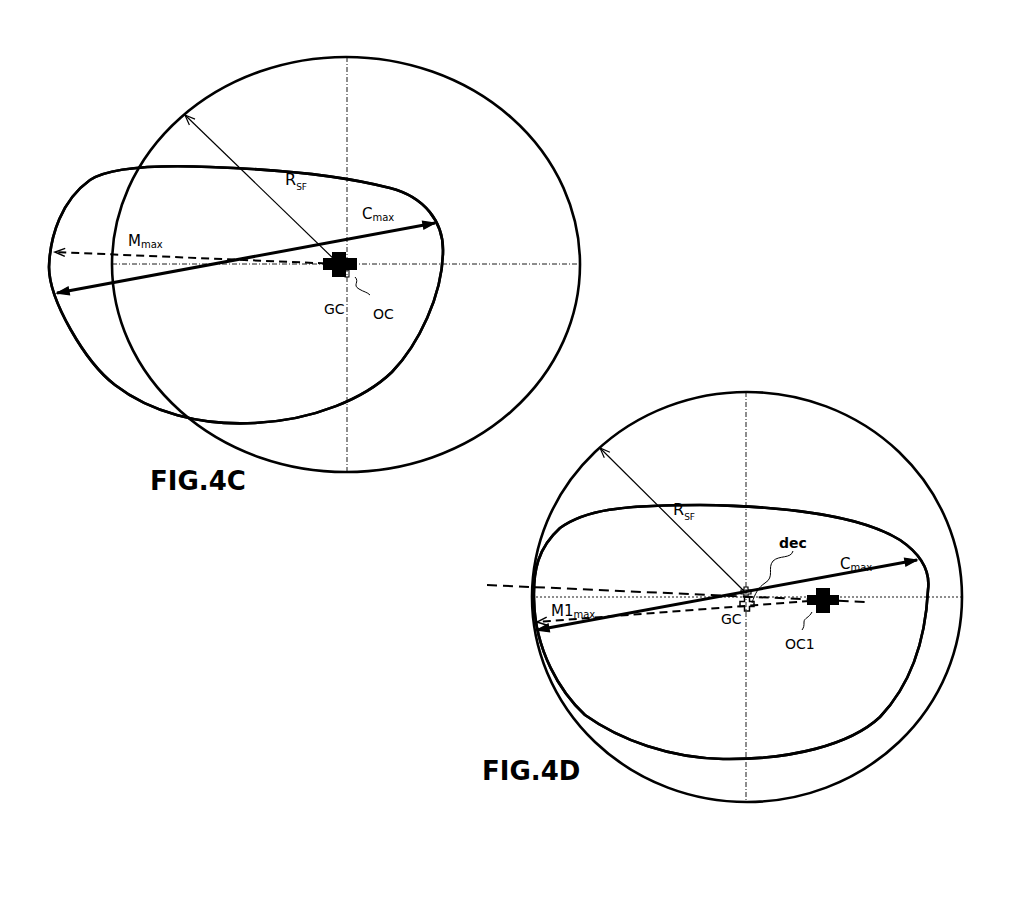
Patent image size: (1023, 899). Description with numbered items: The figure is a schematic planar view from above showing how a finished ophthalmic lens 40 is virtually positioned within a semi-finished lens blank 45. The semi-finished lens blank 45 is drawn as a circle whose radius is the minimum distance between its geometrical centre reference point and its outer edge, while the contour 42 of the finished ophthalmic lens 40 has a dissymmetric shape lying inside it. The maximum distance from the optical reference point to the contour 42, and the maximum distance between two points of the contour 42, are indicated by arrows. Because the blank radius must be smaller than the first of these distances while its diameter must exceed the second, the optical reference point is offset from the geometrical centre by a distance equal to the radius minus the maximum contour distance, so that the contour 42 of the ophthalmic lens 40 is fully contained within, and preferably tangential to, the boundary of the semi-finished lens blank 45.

In FIG. 4C, the finished ophthalmic lens 40 is at (246, 301).
In FIG. 4D, the finished ophthalmic lens 40 is at (731, 658).
In FIG. 4C, the contour 42 is at (280, 424).
In FIG. 4D, the contour 42 is at (687, 767).
In FIG. 4C, the semi-finished lens blank 45 is at (356, 264).
In FIG. 4D, the semi-finished lens blank 45 is at (759, 597).